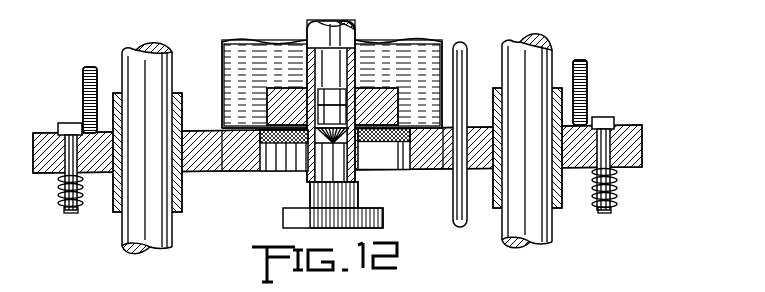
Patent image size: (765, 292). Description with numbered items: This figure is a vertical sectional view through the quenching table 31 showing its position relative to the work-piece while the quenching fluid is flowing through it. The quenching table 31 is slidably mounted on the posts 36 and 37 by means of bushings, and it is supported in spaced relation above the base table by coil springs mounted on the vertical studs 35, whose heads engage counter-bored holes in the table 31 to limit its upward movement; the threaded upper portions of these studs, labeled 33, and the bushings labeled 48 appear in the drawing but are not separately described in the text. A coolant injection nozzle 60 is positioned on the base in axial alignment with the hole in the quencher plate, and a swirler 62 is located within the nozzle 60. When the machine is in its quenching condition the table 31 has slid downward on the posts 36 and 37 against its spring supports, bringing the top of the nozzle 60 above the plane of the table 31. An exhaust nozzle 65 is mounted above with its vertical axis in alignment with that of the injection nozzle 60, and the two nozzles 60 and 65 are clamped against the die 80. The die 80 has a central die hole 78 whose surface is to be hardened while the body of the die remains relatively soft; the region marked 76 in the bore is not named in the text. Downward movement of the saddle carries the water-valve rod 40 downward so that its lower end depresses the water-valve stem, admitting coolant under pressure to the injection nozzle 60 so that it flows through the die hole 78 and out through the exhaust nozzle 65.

The quenching table 31 is at (642, 137).
The threaded bolt 33 is at (82, 80).
The vertical stud 35 is at (64, 213).
The post 36 is at (172, 67).
The post 37 is at (552, 56).
The water-valve rod 40 is at (468, 64).
The bushing 48 is at (387, 143).
The coolant injection nozzle 60 is at (359, 194).
The swirler 62 is at (348, 176).
The exhaust nozzle 65 is at (355, 55).
The upper shaft section 76 is at (318, 98).
The central die hole 78 is at (318, 113).
The die 80 is at (312, 87).